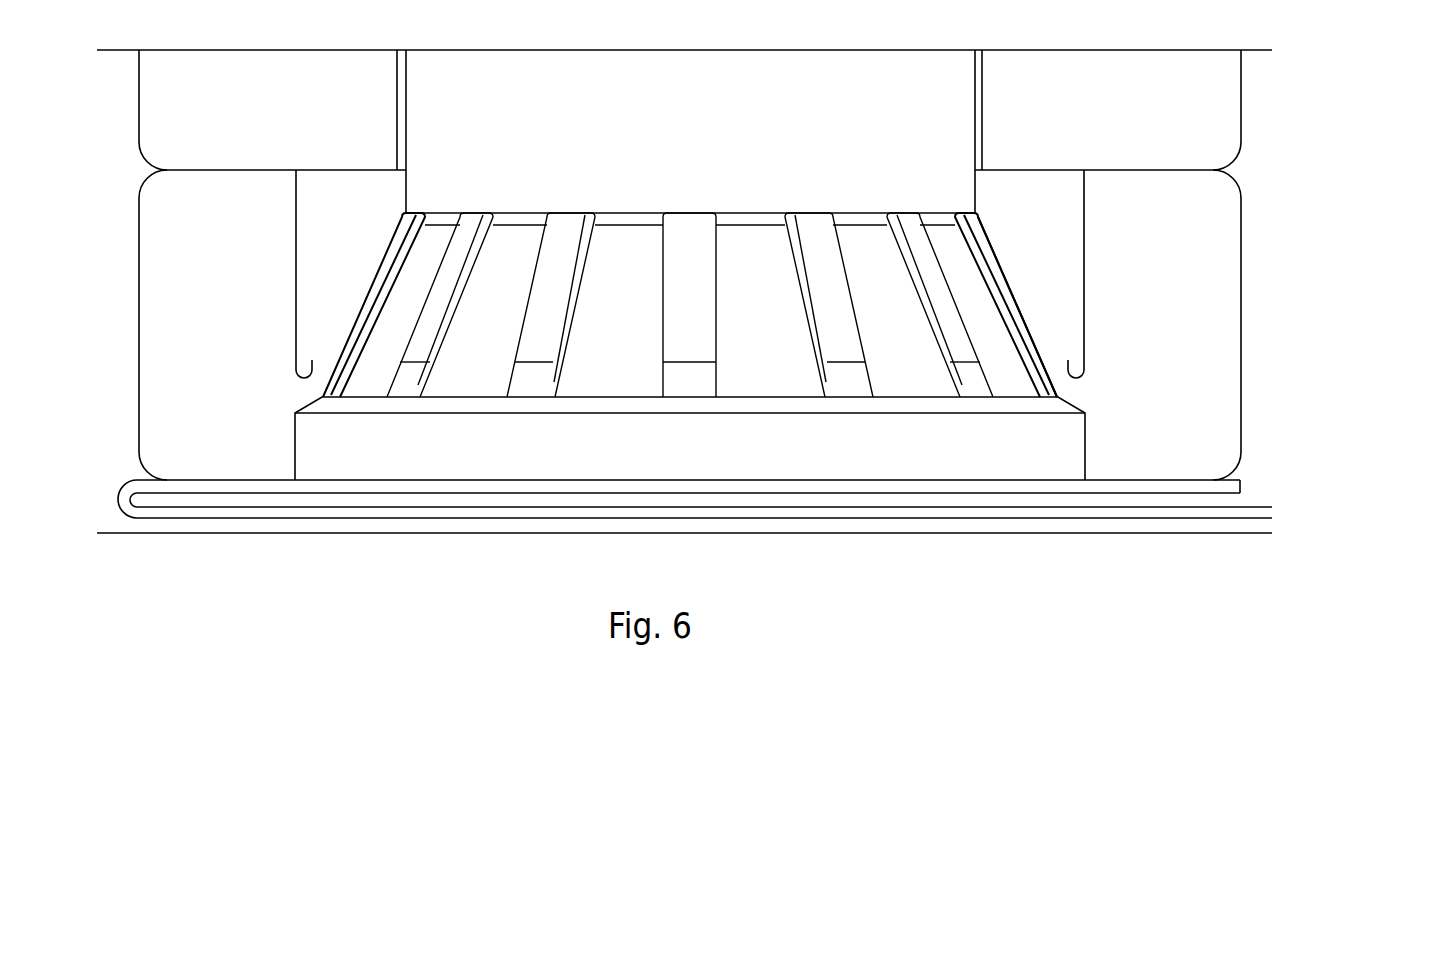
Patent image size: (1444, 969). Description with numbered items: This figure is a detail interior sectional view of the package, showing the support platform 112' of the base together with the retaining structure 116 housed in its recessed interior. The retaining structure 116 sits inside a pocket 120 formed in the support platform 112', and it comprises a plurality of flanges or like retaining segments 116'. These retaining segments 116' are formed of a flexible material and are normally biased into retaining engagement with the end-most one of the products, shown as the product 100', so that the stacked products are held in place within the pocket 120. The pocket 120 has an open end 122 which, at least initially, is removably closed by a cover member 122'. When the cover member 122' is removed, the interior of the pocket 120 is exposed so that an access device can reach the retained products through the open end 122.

The end-most product 100' is at (690, 131).
The support platform 112' is at (1251, 325).
The retaining structure 116 is at (754, 305).
The retaining segments 116' is at (1086, 307).
The pocket 120 is at (320, 285).
The open end 122 is at (836, 438).
The cover member 122' is at (777, 510).